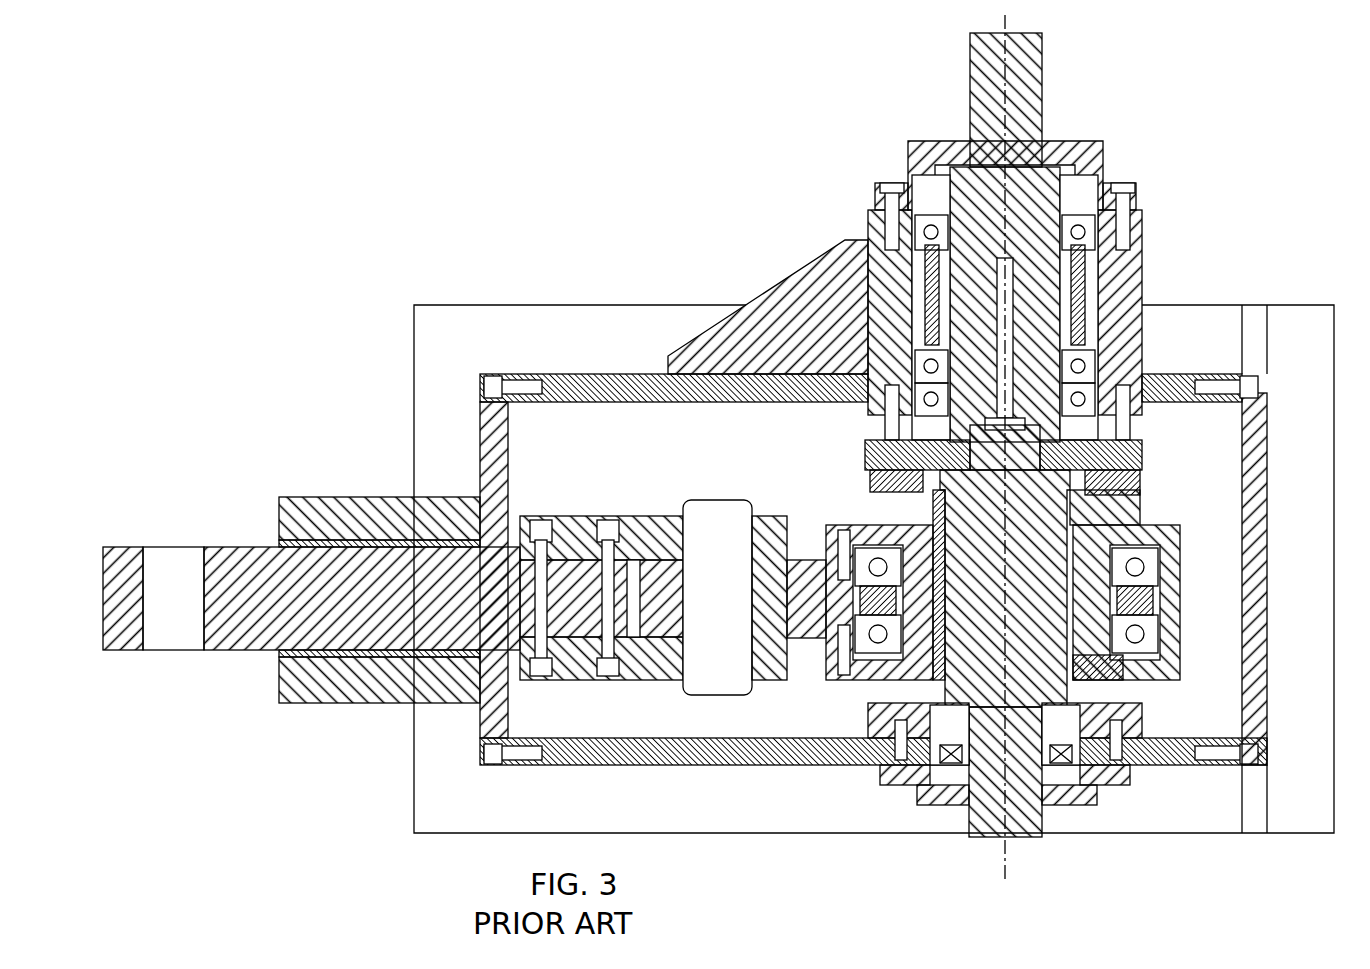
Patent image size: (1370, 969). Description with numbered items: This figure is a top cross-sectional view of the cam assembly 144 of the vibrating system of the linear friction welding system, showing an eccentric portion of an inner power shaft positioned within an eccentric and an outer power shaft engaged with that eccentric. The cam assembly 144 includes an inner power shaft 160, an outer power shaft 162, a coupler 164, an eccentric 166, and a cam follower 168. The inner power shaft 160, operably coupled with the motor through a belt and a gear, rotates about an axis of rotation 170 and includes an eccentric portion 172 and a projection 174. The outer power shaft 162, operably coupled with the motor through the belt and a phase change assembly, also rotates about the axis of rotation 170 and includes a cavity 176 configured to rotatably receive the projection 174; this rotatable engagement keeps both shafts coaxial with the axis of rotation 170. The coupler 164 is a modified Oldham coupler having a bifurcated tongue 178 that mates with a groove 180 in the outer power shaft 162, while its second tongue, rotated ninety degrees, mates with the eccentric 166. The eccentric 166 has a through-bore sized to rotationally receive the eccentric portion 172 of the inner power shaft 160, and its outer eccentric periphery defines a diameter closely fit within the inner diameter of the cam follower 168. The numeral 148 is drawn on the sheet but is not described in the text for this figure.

The cam assembly 144 is at (384, 212).
The input shaft 148 is at (240, 545).
The inner power shaft 160 is at (969, 836).
The outer power shaft 162 is at (970, 82).
The coupler 164 is at (878, 484).
The eccentric 166 is at (1145, 515).
The cam follower 168 is at (822, 565).
The axis of rotation 170 is at (1005, 860).
The eccentric portion 172 is at (880, 498).
The projection 174 is at (1172, 385).
The cavity 176 is at (1142, 432).
The bifurcated tongue 178 is at (1145, 482).
The groove 180 is at (865, 470).